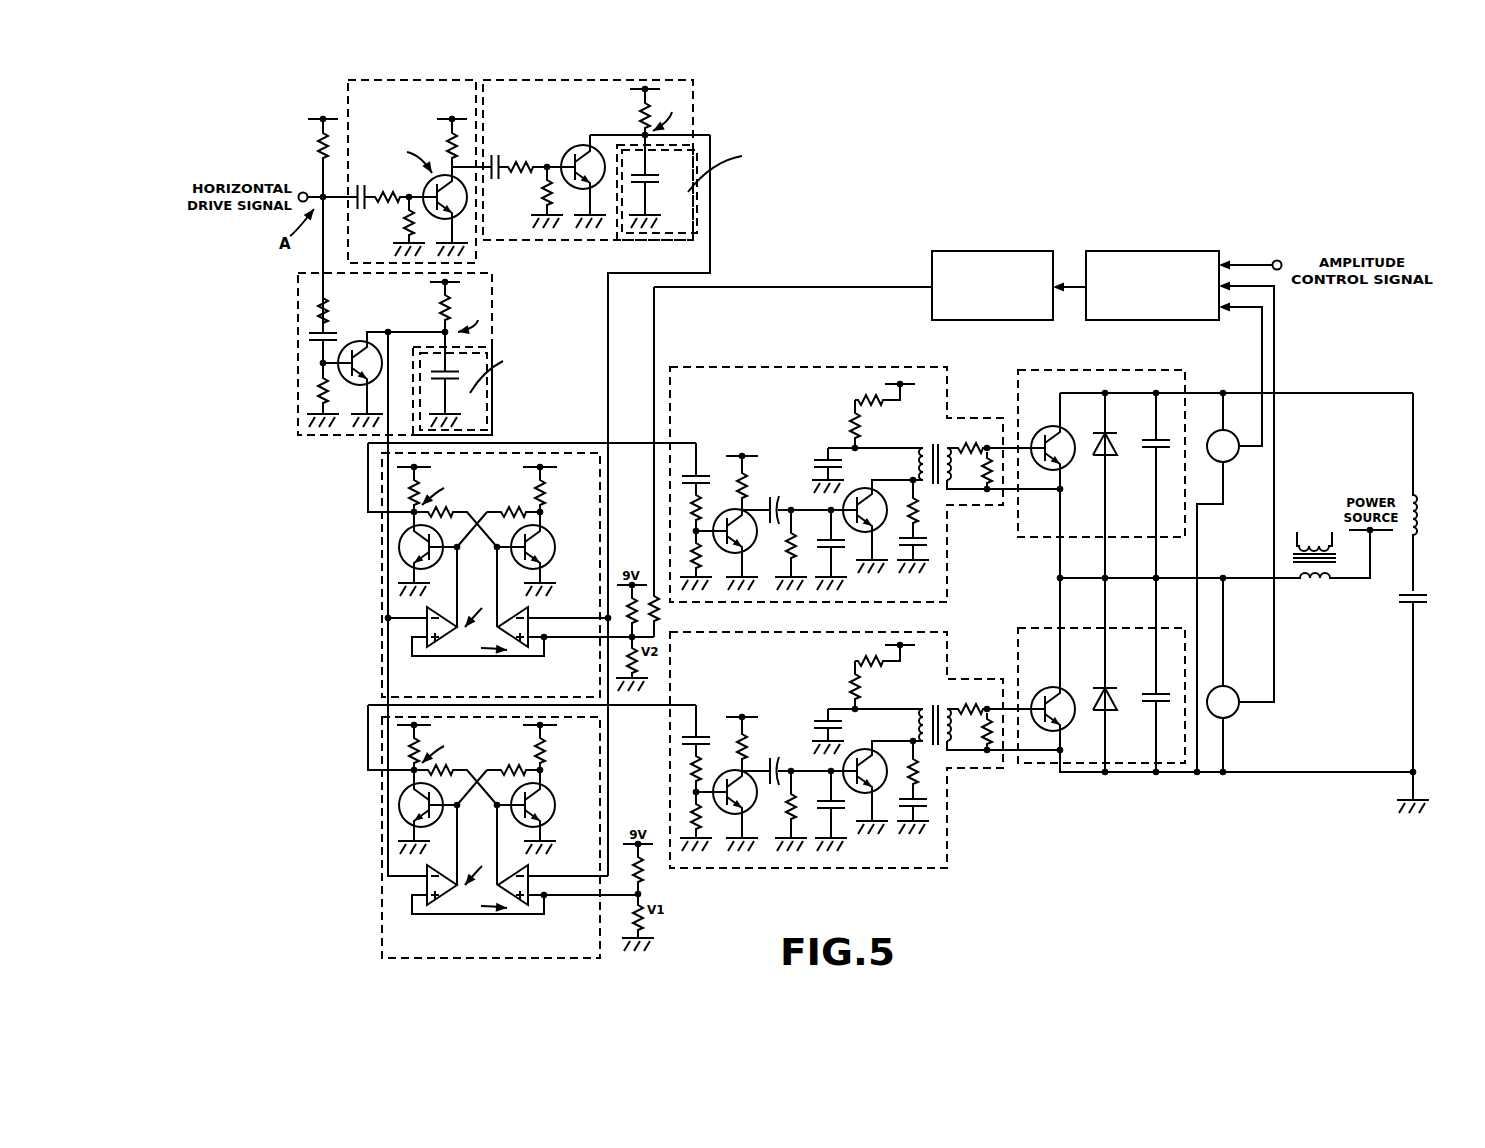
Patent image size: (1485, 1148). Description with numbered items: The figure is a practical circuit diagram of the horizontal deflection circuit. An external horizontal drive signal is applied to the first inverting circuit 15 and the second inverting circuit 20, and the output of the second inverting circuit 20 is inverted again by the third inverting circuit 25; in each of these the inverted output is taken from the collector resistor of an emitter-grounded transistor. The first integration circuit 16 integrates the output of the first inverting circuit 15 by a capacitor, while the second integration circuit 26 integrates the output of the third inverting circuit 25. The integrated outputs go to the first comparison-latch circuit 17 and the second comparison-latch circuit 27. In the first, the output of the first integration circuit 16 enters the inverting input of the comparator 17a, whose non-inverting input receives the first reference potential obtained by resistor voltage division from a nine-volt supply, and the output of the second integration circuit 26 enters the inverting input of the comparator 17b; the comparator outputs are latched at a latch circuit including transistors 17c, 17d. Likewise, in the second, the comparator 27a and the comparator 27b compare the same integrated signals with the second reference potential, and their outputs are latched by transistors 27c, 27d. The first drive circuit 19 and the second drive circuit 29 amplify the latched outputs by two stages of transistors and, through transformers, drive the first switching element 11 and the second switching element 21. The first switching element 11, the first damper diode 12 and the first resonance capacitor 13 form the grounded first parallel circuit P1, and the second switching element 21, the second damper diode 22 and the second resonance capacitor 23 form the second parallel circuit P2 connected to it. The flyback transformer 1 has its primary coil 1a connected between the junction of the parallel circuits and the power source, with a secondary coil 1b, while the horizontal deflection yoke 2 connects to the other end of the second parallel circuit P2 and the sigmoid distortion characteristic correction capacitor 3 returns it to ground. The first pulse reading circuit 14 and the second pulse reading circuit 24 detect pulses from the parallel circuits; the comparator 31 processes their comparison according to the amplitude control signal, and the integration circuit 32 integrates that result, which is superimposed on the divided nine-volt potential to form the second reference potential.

The second inverting circuit 20 is at (348, 95).
The third inverting circuit 25 is at (693, 99).
The second integration circuit 26 is at (699, 214).
The first inverting circuit 15 is at (295, 415).
The first integration circuit 16 is at (492, 426).
The second comparison-latch circuit 27 is at (455, 575).
The comparator 27a is at (422, 630).
The comparator 27b is at (540, 630).
The transistor 27c is at (410, 560).
The transistor 27d is at (551, 532).
The first comparison-latch circuit 17 is at (455, 837).
The comparator 17a is at (390, 897).
The comparator 17b is at (543, 908).
The transistor 17c is at (385, 836).
The transistor 17d is at (552, 801).
The second drive circuit 29 is at (804, 365).
The first drive circuit 19 is at (947, 822).
The integration circuit 32 is at (1010, 251).
The comparator 31 is at (1174, 251).
The second parallel circuit P2 is at (1139, 468).
The second switching element 21 is at (1045, 430).
The second damper diode 22 is at (1101, 459).
The second resonance capacitor 23 is at (1146, 453).
The second pulse reading circuit 24 is at (1234, 462).
The first parallel circuit P1 is at (1101, 699).
The first switching element 11 is at (1067, 697).
The first damper diode 12 is at (1102, 714).
The first resonance capacitor 13 is at (1145, 708).
The first pulse reading circuit 14 is at (1236, 719).
The flyback transformer 1 is at (1331, 562).
The primary coil 1a is at (1314, 582).
The secondary coil 1b is at (1312, 542).
The horizontal deflection yoke 2 is at (1424, 514).
The sigmoid distortion characteristic correction capacitor 3 is at (1419, 592).